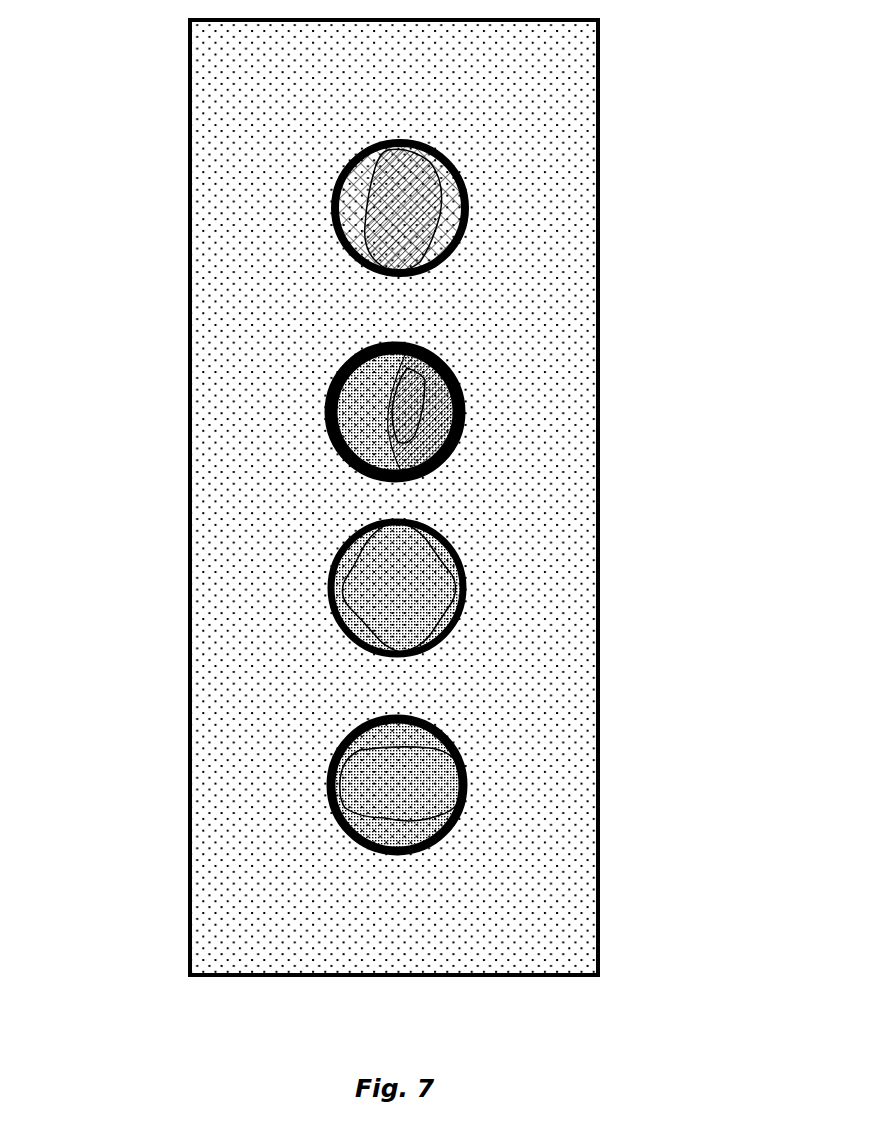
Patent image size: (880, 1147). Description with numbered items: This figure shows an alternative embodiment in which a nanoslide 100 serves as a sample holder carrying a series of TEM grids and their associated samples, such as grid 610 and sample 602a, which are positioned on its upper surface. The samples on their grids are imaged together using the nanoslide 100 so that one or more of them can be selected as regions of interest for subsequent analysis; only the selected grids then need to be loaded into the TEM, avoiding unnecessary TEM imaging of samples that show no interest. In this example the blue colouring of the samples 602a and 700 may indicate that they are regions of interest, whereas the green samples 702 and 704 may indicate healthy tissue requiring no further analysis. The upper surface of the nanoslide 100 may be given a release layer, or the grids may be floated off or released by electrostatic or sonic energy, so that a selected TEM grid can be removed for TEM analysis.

The nanoslide 100 is at (560, 627).
The sample 602a is at (470, 207).
The TEM grid 610 is at (447, 265).
The sample 700 is at (465, 420).
The sample 704 is at (330, 597).
The sample 702 is at (340, 770).